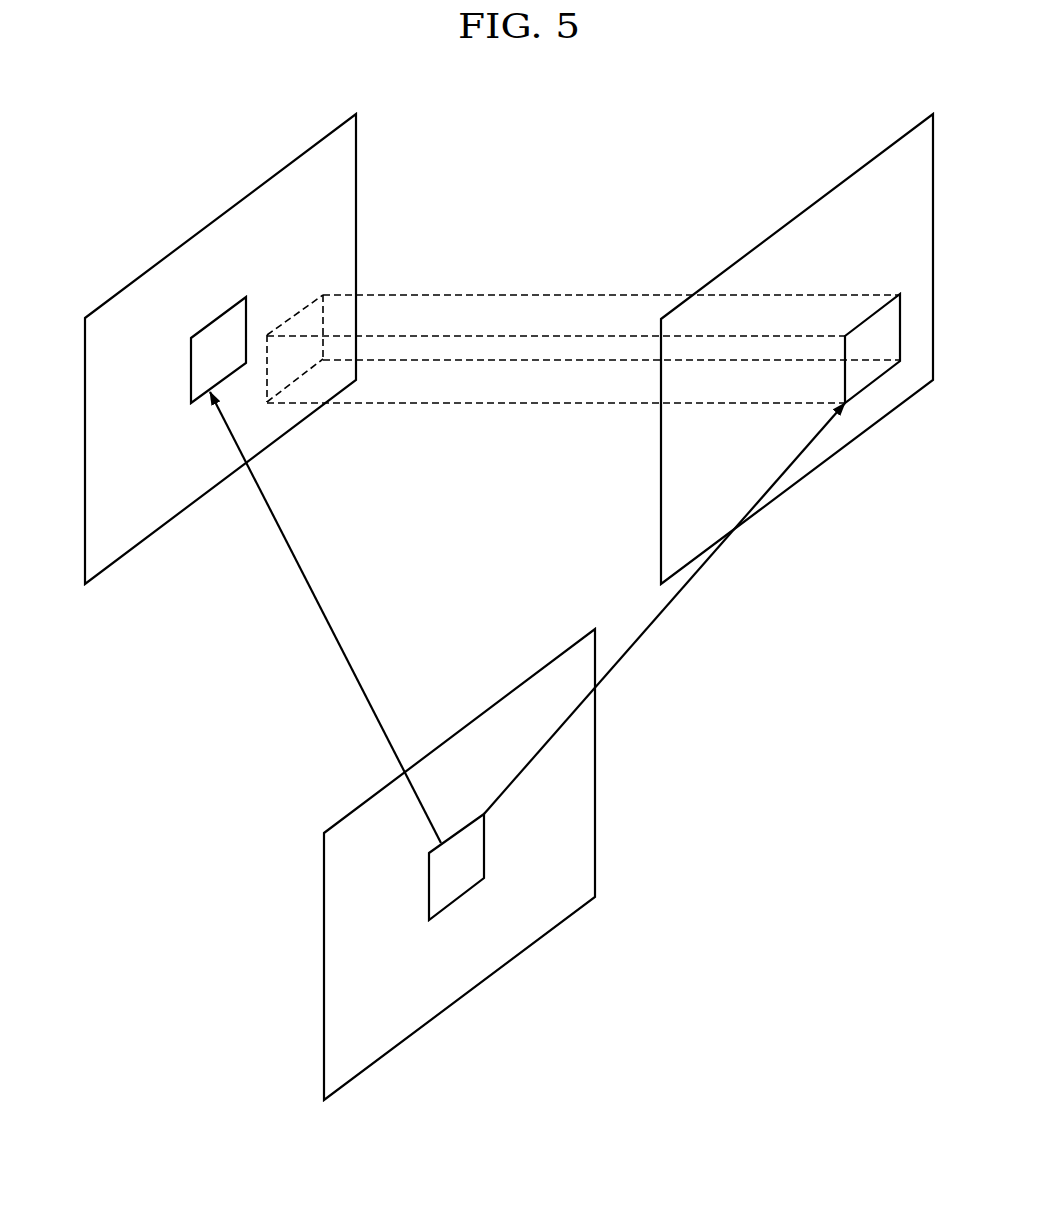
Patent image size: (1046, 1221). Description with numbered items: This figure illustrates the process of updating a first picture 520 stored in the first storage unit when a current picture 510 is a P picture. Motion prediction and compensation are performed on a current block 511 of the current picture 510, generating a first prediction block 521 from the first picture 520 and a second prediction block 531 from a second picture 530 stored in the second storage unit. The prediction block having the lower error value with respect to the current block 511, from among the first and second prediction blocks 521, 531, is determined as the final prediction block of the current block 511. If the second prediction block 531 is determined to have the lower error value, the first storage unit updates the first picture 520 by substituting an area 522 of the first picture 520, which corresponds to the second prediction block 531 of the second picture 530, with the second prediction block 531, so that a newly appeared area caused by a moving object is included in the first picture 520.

The current picture 510 is at (512, 864).
The current block 511 is at (485, 852).
The first picture 520 is at (212, 349).
The first prediction block 521 is at (213, 322).
The area 522 is at (297, 313).
The second picture 530 is at (773, 349).
The second prediction block 531 is at (873, 313).